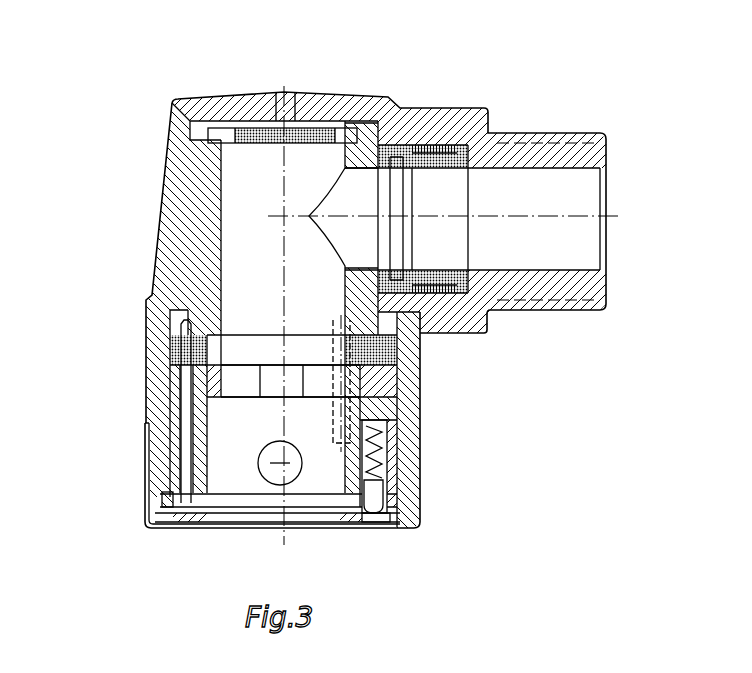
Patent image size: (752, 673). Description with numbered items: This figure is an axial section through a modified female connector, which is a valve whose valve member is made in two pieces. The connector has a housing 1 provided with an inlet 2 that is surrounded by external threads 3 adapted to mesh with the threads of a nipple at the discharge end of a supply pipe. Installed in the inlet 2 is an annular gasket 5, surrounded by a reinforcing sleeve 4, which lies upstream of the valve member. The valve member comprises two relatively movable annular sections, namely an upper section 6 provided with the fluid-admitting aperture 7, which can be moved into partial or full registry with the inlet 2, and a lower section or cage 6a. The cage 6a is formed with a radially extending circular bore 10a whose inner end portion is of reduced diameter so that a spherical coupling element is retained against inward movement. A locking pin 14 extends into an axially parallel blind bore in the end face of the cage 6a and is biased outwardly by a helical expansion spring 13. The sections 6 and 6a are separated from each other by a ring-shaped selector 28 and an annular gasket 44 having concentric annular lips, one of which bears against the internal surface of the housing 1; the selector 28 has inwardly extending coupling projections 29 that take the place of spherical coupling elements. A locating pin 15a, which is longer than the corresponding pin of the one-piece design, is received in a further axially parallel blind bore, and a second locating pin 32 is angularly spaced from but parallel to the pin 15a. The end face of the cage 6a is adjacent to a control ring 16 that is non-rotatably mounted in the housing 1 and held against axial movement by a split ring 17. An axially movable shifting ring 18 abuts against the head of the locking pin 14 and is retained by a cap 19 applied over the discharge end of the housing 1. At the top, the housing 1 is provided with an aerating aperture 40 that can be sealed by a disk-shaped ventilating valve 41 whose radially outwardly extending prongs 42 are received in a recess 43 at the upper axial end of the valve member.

The housing 1 is at (170, 243).
The inlet 2 is at (531, 184).
The external threads 3 is at (512, 137).
The reinforcing sleeve 4 is at (460, 117).
The annular gasket 5 is at (430, 110).
The upper section of valve member 6 is at (188, 197).
The lower section or cage 6a is at (178, 443).
The fluid-admitting aperture 7 is at (396, 108).
The radially extending circular bore 10a is at (258, 467).
The helical expansion spring 13 is at (353, 483).
The locking pin 14 is at (373, 508).
The locating pin 15a is at (183, 418).
The control ring 16 is at (160, 492).
The split ring 17 is at (143, 513).
The shifting ring 18 is at (382, 522).
The cap 19 is at (165, 523).
The ring-shaped selector 28 is at (178, 378).
The coupling projections 29 is at (292, 381).
The second locating pin 32 is at (348, 407).
The aerating aperture 40 is at (293, 98).
The ventilating valve 41 is at (352, 185).
The prongs 42 is at (222, 124).
The recess 43 is at (172, 107).
The annular gasket 44 is at (178, 353).